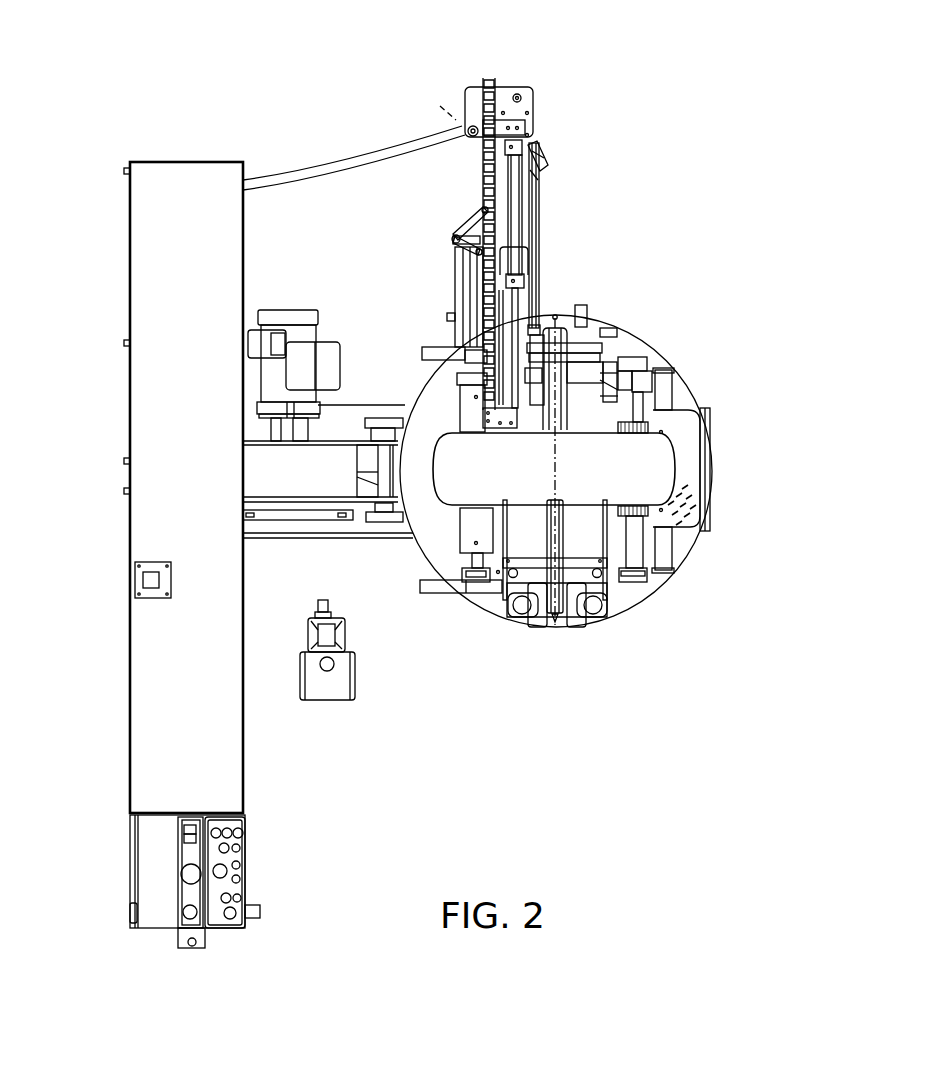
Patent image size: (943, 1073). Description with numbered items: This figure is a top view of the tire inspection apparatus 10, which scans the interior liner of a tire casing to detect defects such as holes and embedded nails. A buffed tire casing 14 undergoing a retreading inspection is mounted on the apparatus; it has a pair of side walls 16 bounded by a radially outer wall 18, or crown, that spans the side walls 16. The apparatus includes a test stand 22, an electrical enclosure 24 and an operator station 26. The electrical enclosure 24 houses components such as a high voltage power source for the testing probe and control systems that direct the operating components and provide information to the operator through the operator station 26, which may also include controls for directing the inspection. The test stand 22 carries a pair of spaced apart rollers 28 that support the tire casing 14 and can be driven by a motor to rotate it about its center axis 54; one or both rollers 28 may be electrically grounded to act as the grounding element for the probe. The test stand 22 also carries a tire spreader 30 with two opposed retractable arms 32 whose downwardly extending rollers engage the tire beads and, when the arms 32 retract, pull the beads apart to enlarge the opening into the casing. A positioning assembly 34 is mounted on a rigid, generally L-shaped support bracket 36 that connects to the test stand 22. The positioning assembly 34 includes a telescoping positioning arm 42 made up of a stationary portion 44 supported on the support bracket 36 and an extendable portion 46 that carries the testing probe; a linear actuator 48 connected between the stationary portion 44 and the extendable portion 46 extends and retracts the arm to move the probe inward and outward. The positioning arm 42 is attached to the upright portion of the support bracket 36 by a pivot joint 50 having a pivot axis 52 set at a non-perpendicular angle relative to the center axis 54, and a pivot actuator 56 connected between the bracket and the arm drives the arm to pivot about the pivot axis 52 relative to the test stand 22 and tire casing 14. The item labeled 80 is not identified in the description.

The tire inspection apparatus 10 is at (314, 124).
The tire casing 14 is at (667, 433).
The side walls 16 is at (653, 373).
The outer wall 18 is at (667, 473).
The test stand 22 is at (598, 632).
The electrical enclosure 24 is at (155, 722).
The operator station 26 is at (180, 874).
The rollers 28 is at (468, 527).
The tire spreader 30 is at (532, 522).
The retractable arms 32 is at (568, 330).
The positioning assembly 34 is at (563, 220).
The support bracket 36 is at (455, 267).
The positioning arm 42 is at (500, 260).
The stationary portion 44 is at (528, 212).
The extendable portion 46 is at (503, 318).
The linear actuator 48 is at (487, 186).
The pivot joint 50 is at (538, 142).
The pivot axis 52 is at (553, 170).
The center axis 54 is at (563, 397).
The pivot actuator 56 is at (455, 238).
The arm 80 is at (298, 523).